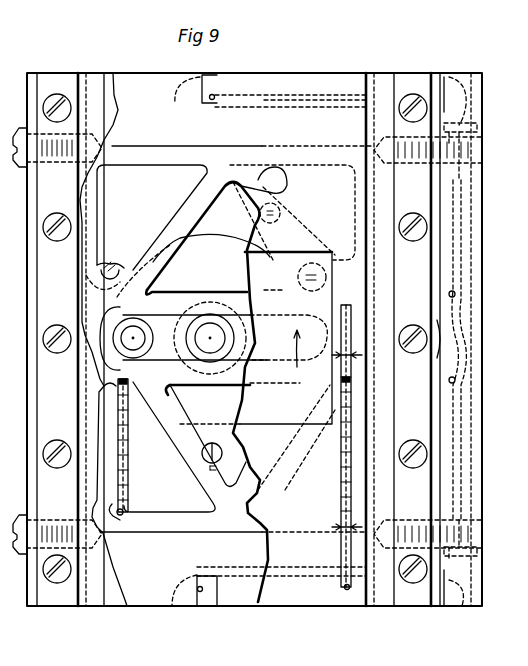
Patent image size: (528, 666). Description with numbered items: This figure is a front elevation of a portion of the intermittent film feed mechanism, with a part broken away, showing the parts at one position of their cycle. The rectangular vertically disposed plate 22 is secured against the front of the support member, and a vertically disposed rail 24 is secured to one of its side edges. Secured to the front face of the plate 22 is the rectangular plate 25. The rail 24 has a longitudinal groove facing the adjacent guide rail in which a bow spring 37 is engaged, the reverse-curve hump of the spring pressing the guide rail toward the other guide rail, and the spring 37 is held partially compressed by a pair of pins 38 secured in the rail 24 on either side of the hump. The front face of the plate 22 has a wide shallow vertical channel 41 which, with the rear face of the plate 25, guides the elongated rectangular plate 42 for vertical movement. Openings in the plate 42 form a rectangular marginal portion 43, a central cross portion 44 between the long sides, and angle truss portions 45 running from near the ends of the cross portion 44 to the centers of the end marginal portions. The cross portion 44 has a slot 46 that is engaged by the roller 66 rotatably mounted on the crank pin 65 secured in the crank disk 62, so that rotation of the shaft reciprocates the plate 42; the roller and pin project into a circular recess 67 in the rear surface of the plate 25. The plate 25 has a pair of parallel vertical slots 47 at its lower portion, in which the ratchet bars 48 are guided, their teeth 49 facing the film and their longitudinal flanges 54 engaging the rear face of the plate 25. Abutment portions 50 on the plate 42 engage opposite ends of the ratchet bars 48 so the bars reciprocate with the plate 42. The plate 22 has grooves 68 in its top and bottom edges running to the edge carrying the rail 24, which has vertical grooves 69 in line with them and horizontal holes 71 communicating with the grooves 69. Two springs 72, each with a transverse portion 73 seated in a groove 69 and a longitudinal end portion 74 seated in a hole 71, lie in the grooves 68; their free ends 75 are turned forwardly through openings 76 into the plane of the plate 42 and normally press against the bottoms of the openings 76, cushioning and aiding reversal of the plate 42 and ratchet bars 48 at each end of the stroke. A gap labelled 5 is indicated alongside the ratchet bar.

The plate 22 is at (140, 87).
The rail 24 is at (462, 83).
The plate 25 is at (292, 87).
The bow spring 37 is at (437, 339).
The pins 38 is at (456, 294).
The channel 41 is at (85, 193).
The plate 42 is at (173, 147).
The rectangular marginal portion 43 is at (133, 153).
The central cross portion 44 is at (192, 294).
The angle truss portions 45 is at (197, 200).
The slot 46 is at (220, 322).
The slots 47 is at (347, 590).
The ratchet bars 48 is at (127, 457).
The teeth 49 is at (127, 477).
The abutment portions 50 is at (100, 384).
The longitudinal flanges 54 is at (118, 487).
The gap 5 is at (347, 444).
The crank disk 62 is at (198, 248).
The crank pin 65 is at (145, 337).
The roller 66 is at (183, 396).
The circular recess 67 is at (290, 223).
The grooves 68 is at (344, 107).
The vertical grooves 69 is at (446, 107).
The horizontal holes 71 is at (464, 132).
The springs 72 is at (317, 100).
The transverse portion 73 is at (446, 110).
The longitudinal end portion 74 is at (464, 138).
The ends 75 is at (213, 97).
The openings 76 is at (208, 83).